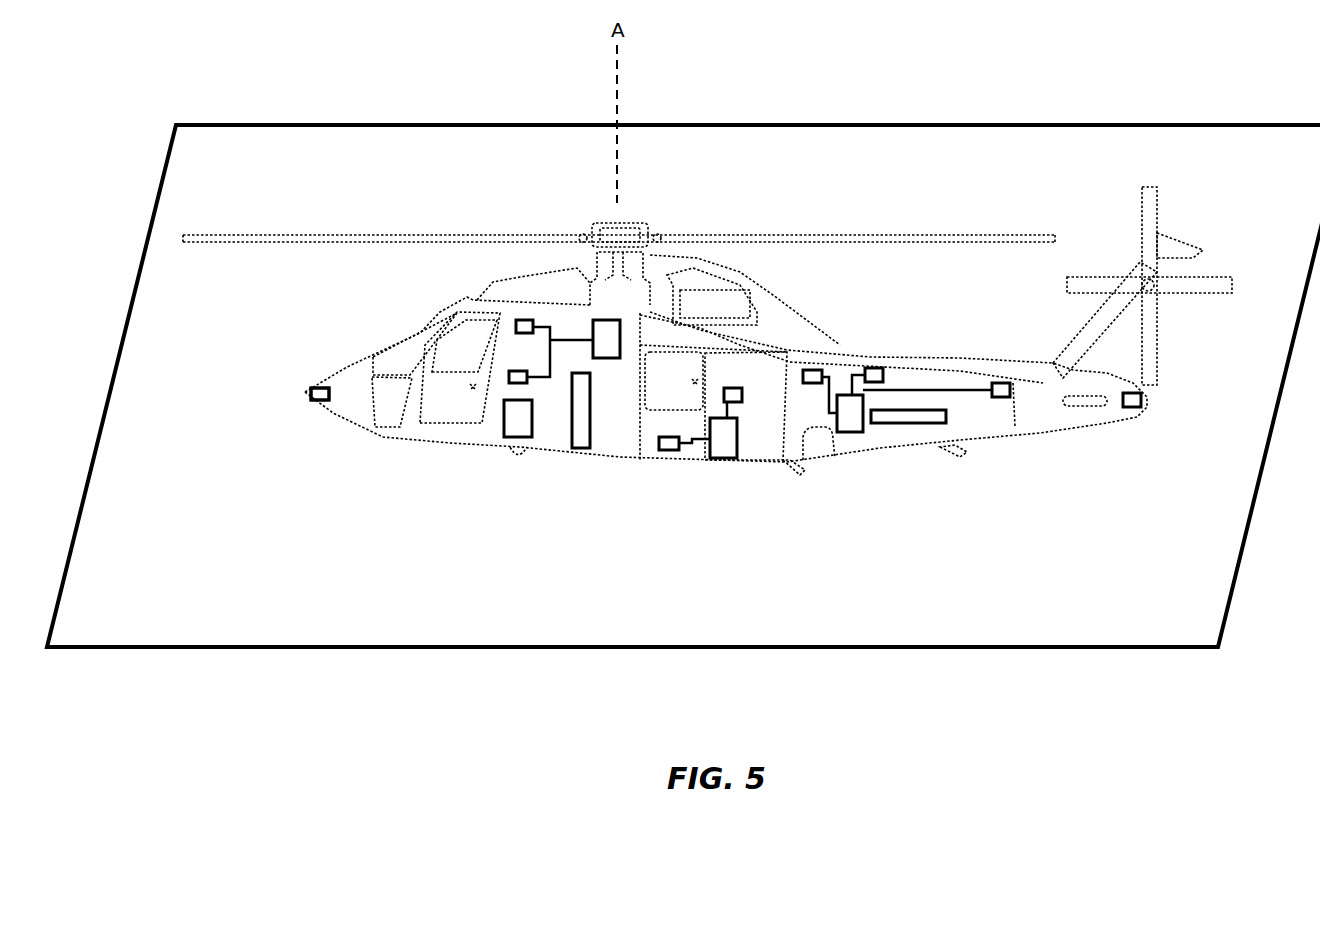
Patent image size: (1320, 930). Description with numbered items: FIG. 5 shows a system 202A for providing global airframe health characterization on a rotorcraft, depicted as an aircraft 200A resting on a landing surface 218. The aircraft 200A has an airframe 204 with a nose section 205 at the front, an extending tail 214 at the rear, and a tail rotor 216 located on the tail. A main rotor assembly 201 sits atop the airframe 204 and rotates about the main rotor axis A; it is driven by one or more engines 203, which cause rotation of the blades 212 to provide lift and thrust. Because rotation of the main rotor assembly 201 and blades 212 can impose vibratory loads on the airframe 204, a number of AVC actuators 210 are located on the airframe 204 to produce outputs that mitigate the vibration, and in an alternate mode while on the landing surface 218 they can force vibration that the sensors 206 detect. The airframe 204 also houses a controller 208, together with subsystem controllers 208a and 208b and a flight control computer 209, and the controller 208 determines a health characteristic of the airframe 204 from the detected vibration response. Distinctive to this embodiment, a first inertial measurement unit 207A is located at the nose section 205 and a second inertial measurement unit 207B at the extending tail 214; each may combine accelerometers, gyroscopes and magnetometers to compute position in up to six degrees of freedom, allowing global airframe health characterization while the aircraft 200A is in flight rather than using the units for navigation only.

The aircraft 200A is at (905, 172).
The main rotor assembly 201 is at (590, 238).
The system 202A is at (789, 567).
The engine 203 is at (717, 297).
The airframe 204 is at (440, 437).
The nose section 205 is at (309, 394).
The sensors 206 is at (523, 320).
The first inertial measurement unit 207A is at (320, 400).
The second inertial measurement unit 207B is at (1140, 407).
The controller 208 is at (593, 340).
The subsystem controller 208a is at (727, 457).
The subsystem controller 208b is at (849, 432).
The flight control computer 209 is at (515, 438).
The AVC actuators 210 is at (585, 449).
The blades 212 is at (722, 237).
The extending tail 214 is at (1003, 425).
The tail rotor 216 is at (1160, 267).
The landing surface 218 is at (482, 648).